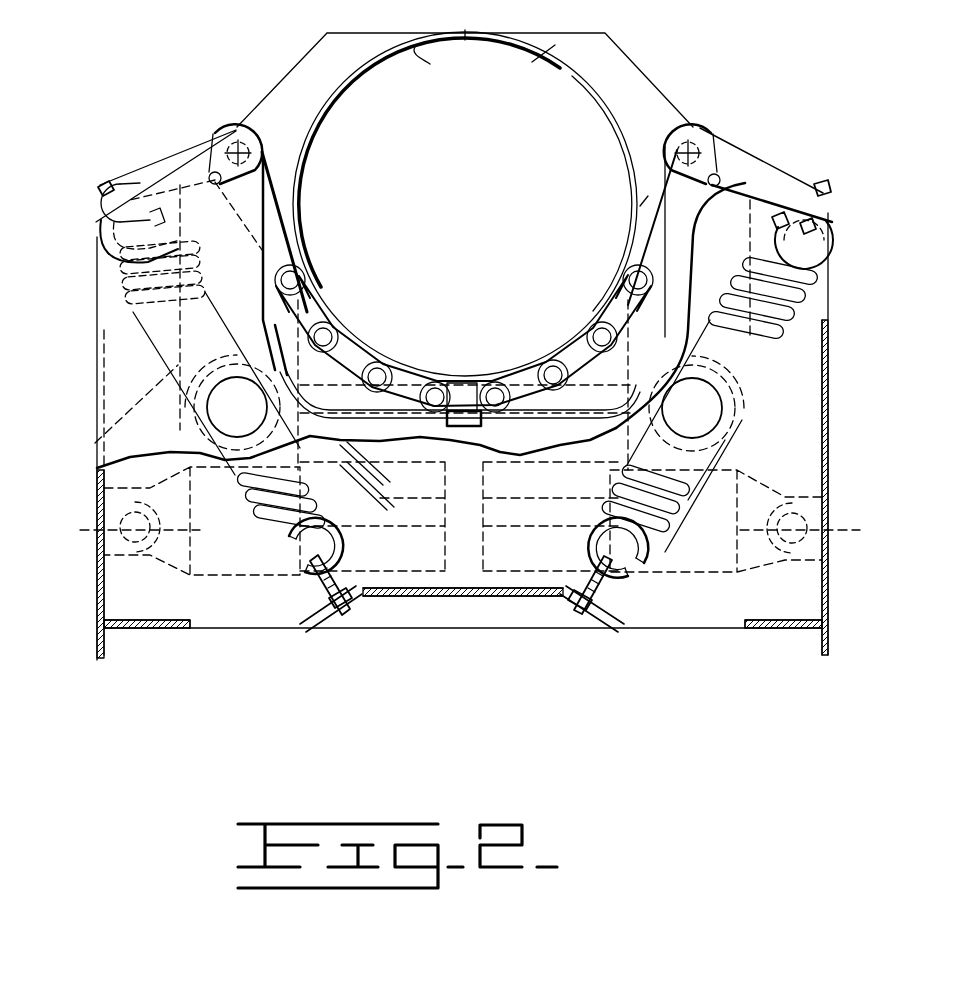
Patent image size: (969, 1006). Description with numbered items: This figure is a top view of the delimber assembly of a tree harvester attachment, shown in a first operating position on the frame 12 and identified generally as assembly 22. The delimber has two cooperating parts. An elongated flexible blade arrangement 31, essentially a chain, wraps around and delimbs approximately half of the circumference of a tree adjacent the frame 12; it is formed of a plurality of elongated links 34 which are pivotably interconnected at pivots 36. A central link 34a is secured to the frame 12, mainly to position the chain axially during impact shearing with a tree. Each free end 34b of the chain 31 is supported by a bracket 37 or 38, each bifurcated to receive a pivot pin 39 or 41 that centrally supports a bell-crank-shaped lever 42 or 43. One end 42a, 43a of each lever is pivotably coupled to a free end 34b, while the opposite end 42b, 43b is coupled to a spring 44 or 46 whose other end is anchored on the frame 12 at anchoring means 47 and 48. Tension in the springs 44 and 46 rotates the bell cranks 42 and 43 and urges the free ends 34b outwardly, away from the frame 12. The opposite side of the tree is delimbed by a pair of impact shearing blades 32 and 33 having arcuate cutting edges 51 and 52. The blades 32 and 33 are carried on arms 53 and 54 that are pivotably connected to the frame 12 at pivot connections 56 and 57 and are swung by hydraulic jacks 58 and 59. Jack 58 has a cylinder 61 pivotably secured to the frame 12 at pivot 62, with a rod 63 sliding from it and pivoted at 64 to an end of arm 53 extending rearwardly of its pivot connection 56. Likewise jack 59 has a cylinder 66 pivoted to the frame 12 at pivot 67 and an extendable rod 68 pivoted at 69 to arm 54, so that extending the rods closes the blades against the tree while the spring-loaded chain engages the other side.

The frame 12 is at (515, 627).
The housing 22 is at (690, 51).
The elongated flexible blade arrangement 31 is at (442, 341).
The impact shearing blade 32 is at (378, 70).
The impact shearing blade 33 is at (589, 113).
The elongated links 34 is at (469, 300).
The central link 34a is at (458, 385).
The free end of the chain 34b is at (326, 259).
The pivotal interconnection 36 is at (378, 367).
The bracket 37 is at (196, 138).
The bracket 38 is at (736, 160).
The pivot pin 39 is at (238, 128).
The pivot pin 41 is at (700, 132).
The lever 42 is at (130, 170).
The end of bell crank lever 42a is at (298, 212).
The end of bell crank lever 42b is at (95, 198).
The lever 43 is at (805, 180).
The end of bell crank lever 43a is at (648, 202).
The end of bell crank lever 43b is at (830, 190).
The spring 44 is at (270, 547).
The spring 46 is at (815, 280).
The spring anchoring means 47 is at (364, 607).
The spring anchoring means 48 is at (556, 614).
The arcuate cutting edge 51 is at (439, 65).
The arcuate cutting edge 52 is at (525, 64).
The arm 53 is at (244, 262).
The arm 54 is at (695, 264).
The pivot connection 56 is at (220, 415).
The pivot connection 57 is at (712, 420).
The hydraulic jack 58 is at (707, 591).
The hydraulic jack 59 is at (232, 594).
The cylinder 61 is at (712, 576).
The pivotal securing of cylinder 62 is at (820, 528).
The rod 63 is at (370, 524).
The pivotal securing of rod 64 is at (250, 530).
The cylinder 66 is at (205, 584).
The pivotal securing of cylinder 67 is at (105, 532).
The extendable rod 68 is at (527, 524).
The pivotal securing of rod 69 is at (668, 540).